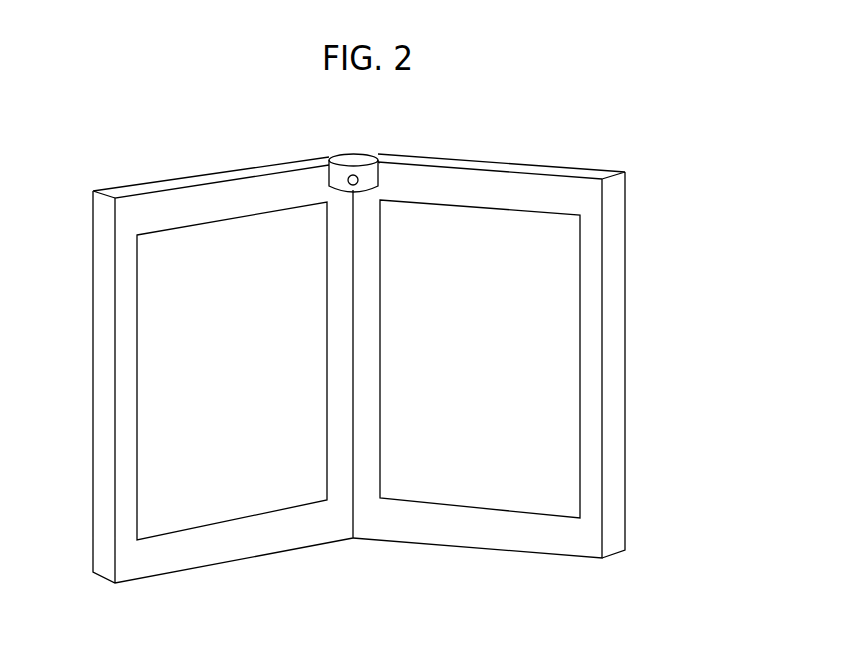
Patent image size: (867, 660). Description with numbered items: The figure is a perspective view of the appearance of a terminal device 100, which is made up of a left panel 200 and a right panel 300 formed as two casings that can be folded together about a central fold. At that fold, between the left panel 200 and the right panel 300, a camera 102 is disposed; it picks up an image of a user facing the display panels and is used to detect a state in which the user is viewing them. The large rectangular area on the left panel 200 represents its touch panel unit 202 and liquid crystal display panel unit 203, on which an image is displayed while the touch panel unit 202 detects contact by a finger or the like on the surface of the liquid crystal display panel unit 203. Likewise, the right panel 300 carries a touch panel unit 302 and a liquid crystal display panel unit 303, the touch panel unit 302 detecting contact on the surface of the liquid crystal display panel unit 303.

The terminal device 100 is at (473, 128).
The camera 102 is at (354, 162).
The left panel 200 is at (215, 556).
The touch panel unit 202 is at (232, 331).
The liquid crystal display panel unit 203 is at (187, 210).
The right panel 300 is at (492, 540).
The touch panel unit 302 is at (548, 359).
The liquid crystal display panel unit 303 is at (580, 378).